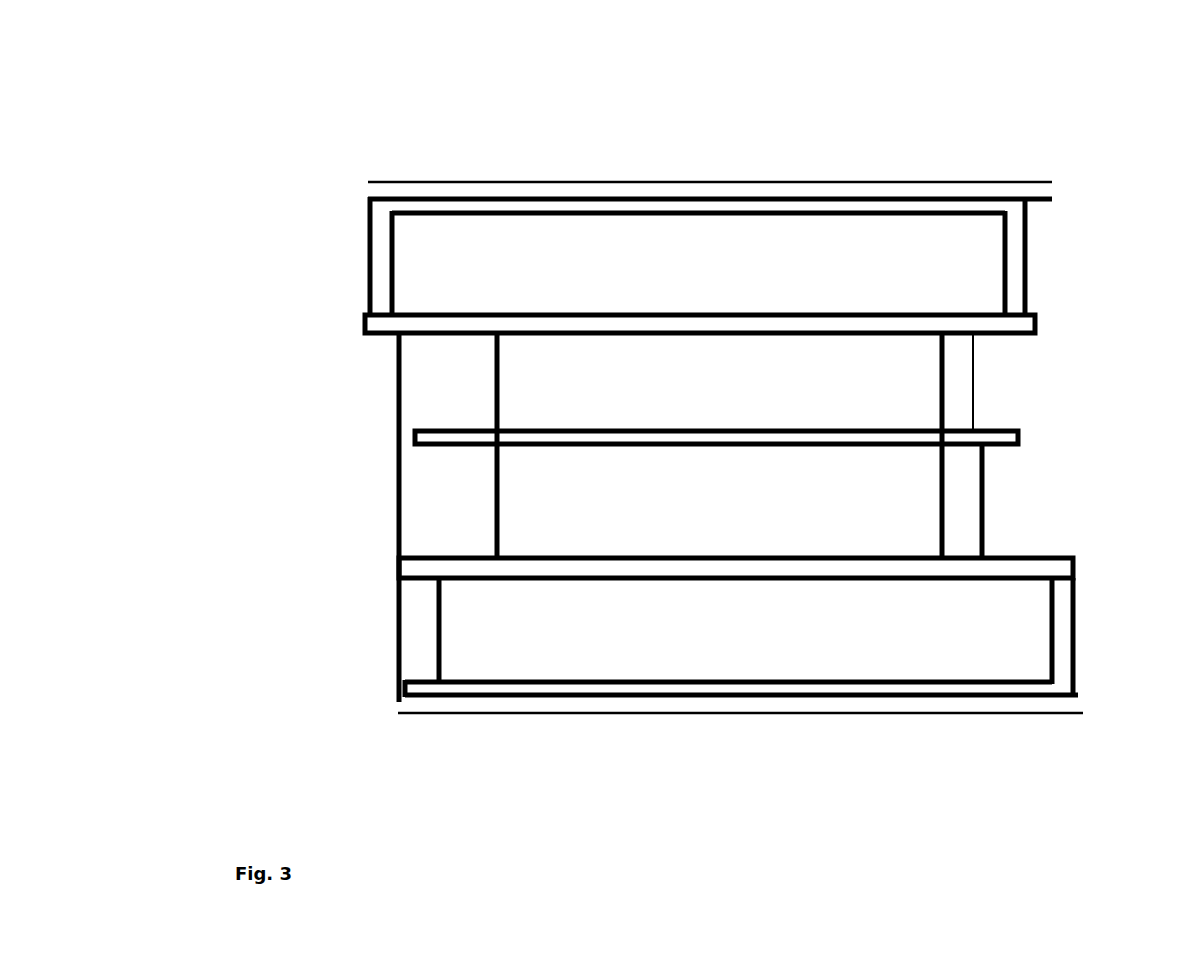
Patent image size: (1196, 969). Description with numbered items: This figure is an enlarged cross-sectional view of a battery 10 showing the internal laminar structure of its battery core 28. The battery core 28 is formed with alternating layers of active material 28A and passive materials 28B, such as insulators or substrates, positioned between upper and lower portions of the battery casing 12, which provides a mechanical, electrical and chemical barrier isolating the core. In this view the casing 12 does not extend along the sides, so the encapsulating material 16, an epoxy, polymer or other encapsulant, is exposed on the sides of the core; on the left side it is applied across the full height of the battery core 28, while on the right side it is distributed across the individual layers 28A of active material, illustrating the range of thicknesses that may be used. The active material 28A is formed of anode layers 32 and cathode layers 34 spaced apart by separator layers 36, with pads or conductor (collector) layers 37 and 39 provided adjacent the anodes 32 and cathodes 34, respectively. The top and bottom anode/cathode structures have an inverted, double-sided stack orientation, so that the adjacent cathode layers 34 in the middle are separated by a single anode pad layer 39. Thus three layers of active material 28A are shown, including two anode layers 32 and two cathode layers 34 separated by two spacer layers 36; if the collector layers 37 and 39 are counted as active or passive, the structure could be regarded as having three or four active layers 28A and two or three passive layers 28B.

The battery 10 is at (302, 72).
The battery casing 12 is at (608, 188).
The encapsulating material 16 is at (388, 238).
The battery core 28 is at (1110, 268).
The active material 28A is at (362, 205).
The passive materials 28B is at (350, 315).
The anode layers 32 is at (925, 281).
The cathode layers 34 is at (590, 410).
The separator layers 36 is at (1036, 323).
The conductor layers 37 is at (825, 205).
The anode pad layer 39 is at (1018, 438).